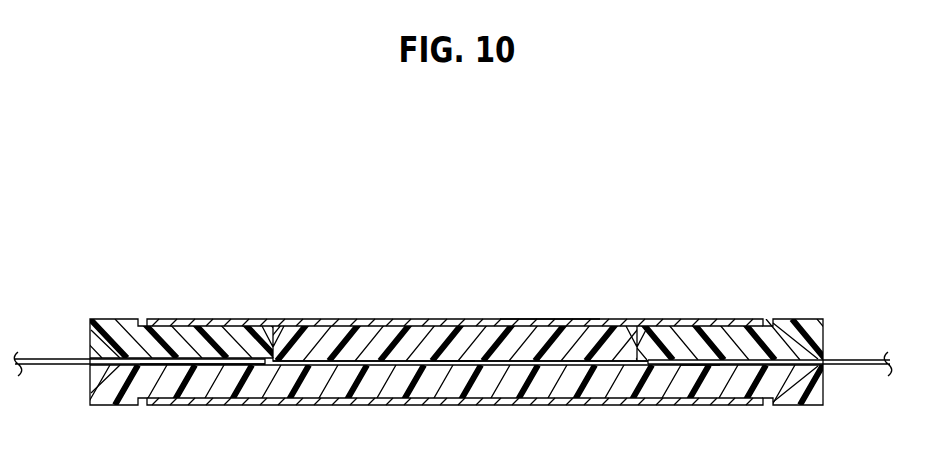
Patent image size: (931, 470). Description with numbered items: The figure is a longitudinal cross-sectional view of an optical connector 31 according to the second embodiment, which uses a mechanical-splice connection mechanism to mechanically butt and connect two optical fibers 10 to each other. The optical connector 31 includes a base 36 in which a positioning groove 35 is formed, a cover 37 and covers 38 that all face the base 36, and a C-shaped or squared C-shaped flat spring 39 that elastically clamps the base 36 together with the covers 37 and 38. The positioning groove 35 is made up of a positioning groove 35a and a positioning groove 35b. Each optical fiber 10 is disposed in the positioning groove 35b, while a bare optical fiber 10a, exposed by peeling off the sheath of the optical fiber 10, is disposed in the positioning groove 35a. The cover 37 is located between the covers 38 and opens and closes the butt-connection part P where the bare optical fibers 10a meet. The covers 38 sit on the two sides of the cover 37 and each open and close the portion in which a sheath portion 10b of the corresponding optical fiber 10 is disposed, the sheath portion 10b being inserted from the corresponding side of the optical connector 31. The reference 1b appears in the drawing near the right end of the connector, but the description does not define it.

The optical connector 31 is at (447, 278).
The optical fiber 10 is at (53, 358).
The bare optical fiber 10a is at (302, 362).
The sheath portion 10b is at (219, 364).
The positioning groove 35 is at (483, 322).
The positioning groove 35a is at (335, 322).
The positioning groove 35b is at (167, 320).
The base 36 is at (394, 388).
The cover 37 is at (407, 322).
The cover 38 is at (227, 322).
The flat spring 39 is at (543, 322).
The fiber end 1b is at (697, 366).
The butt-connection part P is at (457, 362).